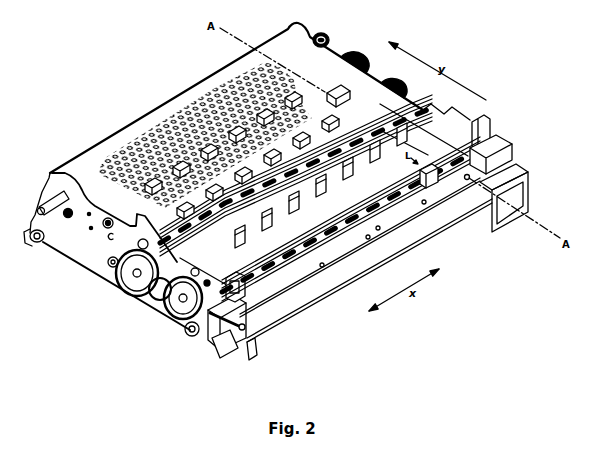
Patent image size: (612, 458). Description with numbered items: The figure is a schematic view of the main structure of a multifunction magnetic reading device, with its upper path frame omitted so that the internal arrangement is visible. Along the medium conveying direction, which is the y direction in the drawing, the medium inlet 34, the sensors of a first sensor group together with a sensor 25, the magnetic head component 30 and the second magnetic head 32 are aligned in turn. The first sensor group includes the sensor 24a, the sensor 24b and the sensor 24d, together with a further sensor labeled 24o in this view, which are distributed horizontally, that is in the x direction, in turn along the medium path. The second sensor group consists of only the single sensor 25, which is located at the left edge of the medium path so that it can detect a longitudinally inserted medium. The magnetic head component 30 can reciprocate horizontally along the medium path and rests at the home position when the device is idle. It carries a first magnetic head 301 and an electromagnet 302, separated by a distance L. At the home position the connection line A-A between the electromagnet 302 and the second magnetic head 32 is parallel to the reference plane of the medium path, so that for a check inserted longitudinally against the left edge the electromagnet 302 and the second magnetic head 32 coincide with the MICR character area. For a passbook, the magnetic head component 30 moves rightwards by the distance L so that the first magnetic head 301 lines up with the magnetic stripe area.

The second magnetic head 32 is at (338, 91).
The electromagnet 302 is at (506, 155).
The first magnetic head 301 is at (420, 167).
The magnetic head component 30 is at (447, 176).
The sensor 25 is at (464, 179).
The sensor 24a is at (324, 264).
The sensor 24b is at (366, 238).
The position marker o 24o is at (380, 228).
The sensor 24d is at (422, 203).
The medium inlet 34 is at (309, 269).